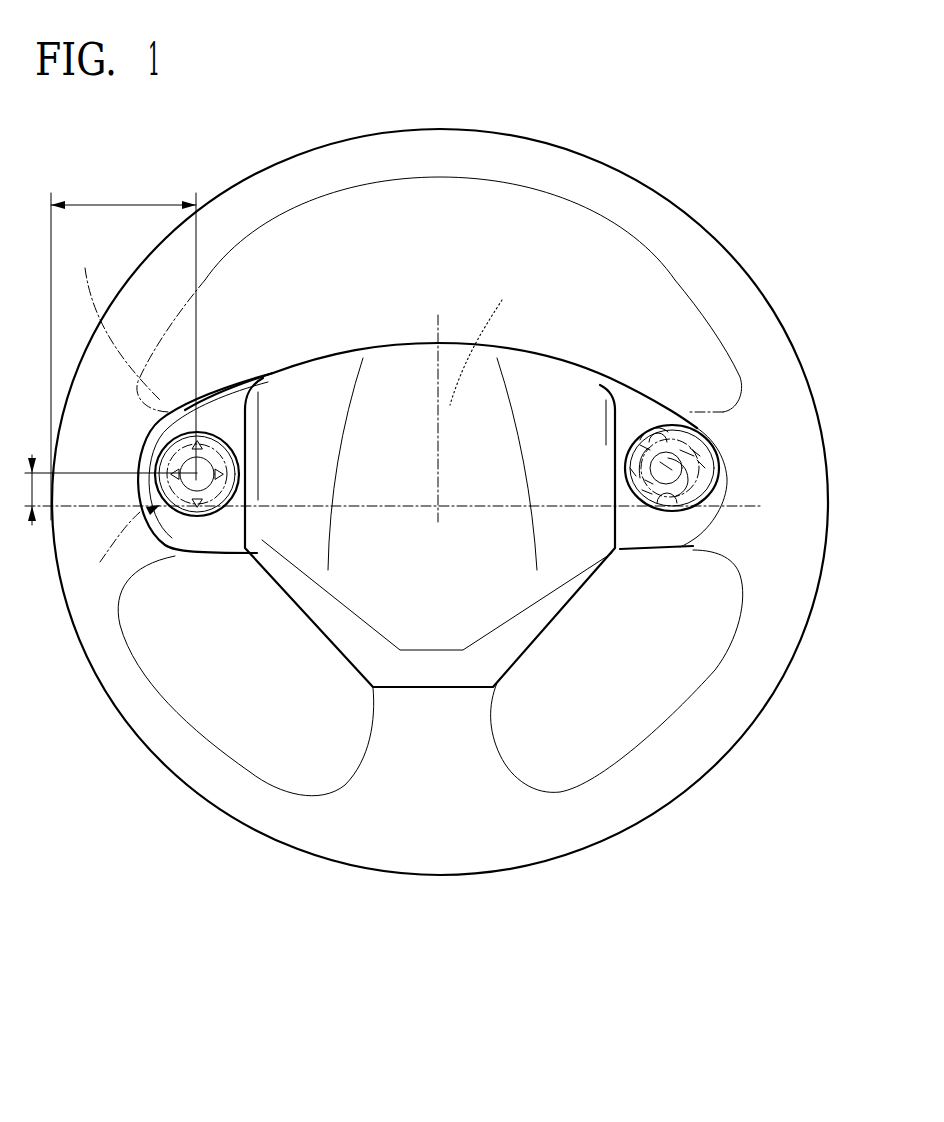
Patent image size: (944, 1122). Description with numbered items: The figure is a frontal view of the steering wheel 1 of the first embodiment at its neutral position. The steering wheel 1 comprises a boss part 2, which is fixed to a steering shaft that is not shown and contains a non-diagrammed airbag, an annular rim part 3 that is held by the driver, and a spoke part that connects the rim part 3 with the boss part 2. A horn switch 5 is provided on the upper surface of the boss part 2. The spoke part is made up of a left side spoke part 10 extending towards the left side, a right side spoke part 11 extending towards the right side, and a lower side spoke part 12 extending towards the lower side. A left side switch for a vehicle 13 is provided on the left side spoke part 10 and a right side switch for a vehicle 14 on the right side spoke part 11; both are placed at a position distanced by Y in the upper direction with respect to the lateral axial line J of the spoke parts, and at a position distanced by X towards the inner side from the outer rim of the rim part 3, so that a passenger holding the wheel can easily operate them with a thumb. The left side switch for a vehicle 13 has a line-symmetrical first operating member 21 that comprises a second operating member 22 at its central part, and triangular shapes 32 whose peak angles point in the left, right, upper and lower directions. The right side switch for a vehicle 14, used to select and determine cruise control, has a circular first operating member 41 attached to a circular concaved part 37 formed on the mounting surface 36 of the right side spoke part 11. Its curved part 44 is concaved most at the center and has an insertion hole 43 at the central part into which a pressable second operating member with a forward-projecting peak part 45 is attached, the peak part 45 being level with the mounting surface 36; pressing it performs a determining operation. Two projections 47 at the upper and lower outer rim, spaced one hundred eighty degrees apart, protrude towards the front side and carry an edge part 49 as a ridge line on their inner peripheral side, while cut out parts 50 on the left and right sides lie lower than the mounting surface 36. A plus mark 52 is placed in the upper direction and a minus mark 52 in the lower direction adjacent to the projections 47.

The steering wheel 1 is at (637, 100).
The boss part 2 is at (478, 335).
The rim part 3 is at (745, 298).
The horn switch 5 is at (446, 520).
The left side spoke part 10 is at (135, 362).
The right side spoke part 11 is at (657, 540).
The lower side spoke part 12 is at (492, 730).
The left side switch for a vehicle 13 is at (114, 547).
The right side switch for a vehicle 14 is at (707, 466).
The first operating member 21 is at (223, 452).
The second operating member 22 is at (190, 478).
The triangular shape 32 is at (200, 448).
The mounting surface 36 is at (643, 410).
The circular concaved part 37 is at (640, 432).
The first operating member 41 is at (693, 453).
The insertion hole 43 is at (667, 470).
The curved part 44 is at (647, 490).
The peak part 45 is at (670, 477).
The projection 47 is at (667, 427).
The edge part 49 is at (687, 452).
The cut out part 50 is at (697, 463).
The mark 52 is at (648, 447).
The distance X is at (123, 347).
The distance Y is at (23, 490).
The lateral axial line J is at (376, 503).